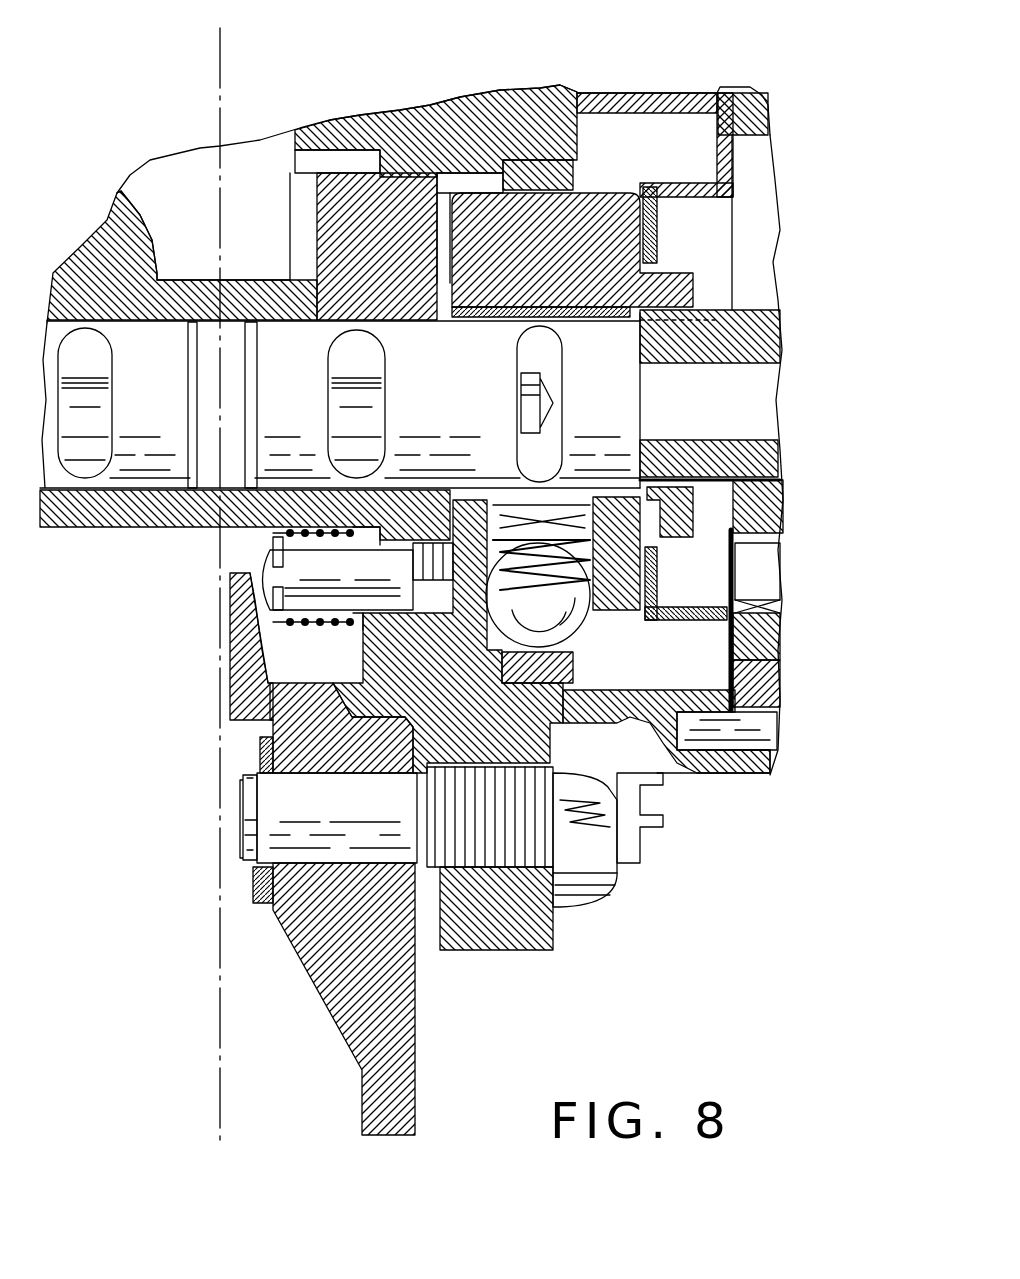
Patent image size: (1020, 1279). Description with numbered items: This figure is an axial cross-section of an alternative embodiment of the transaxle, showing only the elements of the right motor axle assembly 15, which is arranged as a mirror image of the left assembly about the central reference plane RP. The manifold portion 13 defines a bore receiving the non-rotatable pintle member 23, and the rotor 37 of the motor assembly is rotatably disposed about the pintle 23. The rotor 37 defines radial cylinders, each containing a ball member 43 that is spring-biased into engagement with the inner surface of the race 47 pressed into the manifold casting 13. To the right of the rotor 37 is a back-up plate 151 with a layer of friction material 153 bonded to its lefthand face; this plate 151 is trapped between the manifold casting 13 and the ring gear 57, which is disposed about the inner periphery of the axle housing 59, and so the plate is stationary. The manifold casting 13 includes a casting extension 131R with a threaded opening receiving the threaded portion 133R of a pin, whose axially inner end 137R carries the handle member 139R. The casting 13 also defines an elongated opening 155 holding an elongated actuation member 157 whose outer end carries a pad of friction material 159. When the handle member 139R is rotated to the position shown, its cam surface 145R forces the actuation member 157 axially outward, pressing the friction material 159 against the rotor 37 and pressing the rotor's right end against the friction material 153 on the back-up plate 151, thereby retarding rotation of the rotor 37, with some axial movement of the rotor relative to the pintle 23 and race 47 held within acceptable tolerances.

The central reference plane RP is at (220, 95).
The manifold portion 13 is at (480, 150).
The right motor axle assembly 15 is at (708, 75).
The pintle member 23 is at (427, 363).
The rotor 37 is at (597, 203).
The ball member 43 is at (577, 630).
The race 47 is at (557, 663).
The ring gear 57 is at (750, 117).
The axle housing 59 is at (748, 770).
The casting extension 131R is at (483, 937).
The threaded portion 133R is at (480, 820).
The axially inner end 137R is at (247, 817).
The handle member 139R is at (337, 973).
The cam surface 145R is at (257, 633).
The back-up plate 151 is at (745, 262).
The friction material 153 is at (643, 187).
The elongated opening 155 is at (397, 553).
The actuation member 157 is at (287, 573).
The friction material 159 is at (450, 590).